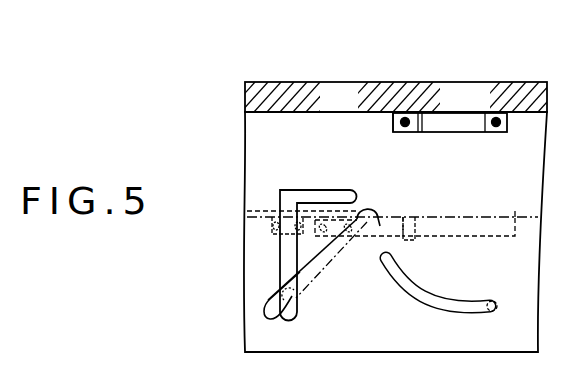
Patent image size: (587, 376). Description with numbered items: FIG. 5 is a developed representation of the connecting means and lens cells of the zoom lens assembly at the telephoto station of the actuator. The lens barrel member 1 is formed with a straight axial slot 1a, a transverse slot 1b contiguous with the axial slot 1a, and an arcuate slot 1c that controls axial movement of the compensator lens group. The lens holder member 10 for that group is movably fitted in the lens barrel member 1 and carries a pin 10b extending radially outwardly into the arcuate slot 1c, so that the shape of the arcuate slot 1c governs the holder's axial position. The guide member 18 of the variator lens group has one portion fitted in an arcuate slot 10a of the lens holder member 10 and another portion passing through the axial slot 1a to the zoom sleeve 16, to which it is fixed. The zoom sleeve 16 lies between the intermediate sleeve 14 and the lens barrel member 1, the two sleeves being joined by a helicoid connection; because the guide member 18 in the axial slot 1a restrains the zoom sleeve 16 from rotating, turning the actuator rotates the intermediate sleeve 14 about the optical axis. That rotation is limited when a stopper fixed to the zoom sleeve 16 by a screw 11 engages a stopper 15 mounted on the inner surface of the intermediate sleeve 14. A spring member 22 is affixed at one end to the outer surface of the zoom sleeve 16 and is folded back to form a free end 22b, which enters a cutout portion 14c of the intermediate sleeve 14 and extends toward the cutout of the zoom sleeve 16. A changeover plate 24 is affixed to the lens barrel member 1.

The lens barrel member 1 is at (340, 96).
The straight axial slot 1a is at (413, 97).
The transverse slot 1b is at (312, 189).
The arcuate slot 1c is at (415, 294).
The lens holder member 10 is at (272, 234).
The arcuate slot 10a is at (324, 268).
The pin 10b is at (488, 312).
The screw 11 is at (273, 212).
The intermediate sleeve 14 is at (465, 216).
The cutout portion 14c is at (410, 241).
The stopper 15 is at (262, 226).
The zoom sleeve 16 is at (523, 213).
The guide member 18 is at (297, 298).
The spring member 22 is at (383, 222).
The free end 22b is at (408, 214).
The changeover plate 24 is at (465, 116).